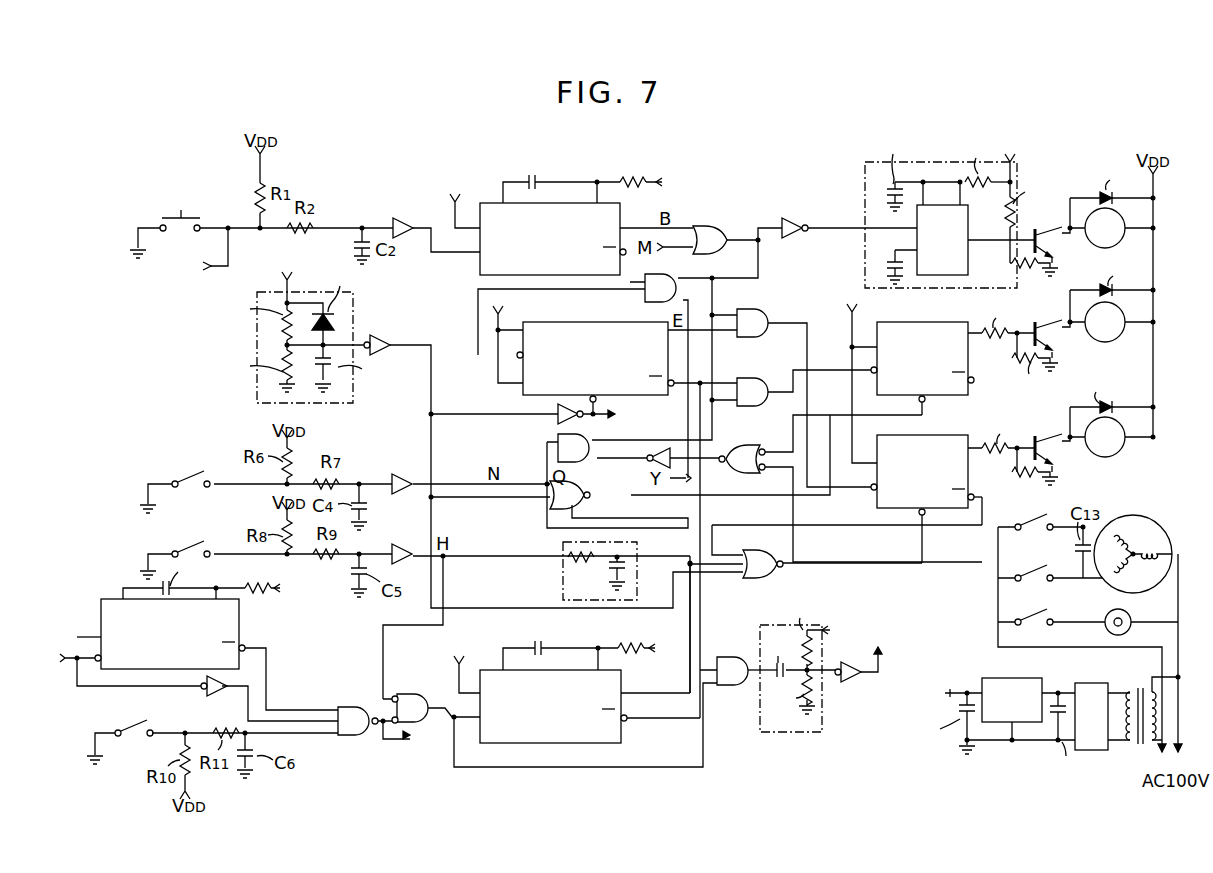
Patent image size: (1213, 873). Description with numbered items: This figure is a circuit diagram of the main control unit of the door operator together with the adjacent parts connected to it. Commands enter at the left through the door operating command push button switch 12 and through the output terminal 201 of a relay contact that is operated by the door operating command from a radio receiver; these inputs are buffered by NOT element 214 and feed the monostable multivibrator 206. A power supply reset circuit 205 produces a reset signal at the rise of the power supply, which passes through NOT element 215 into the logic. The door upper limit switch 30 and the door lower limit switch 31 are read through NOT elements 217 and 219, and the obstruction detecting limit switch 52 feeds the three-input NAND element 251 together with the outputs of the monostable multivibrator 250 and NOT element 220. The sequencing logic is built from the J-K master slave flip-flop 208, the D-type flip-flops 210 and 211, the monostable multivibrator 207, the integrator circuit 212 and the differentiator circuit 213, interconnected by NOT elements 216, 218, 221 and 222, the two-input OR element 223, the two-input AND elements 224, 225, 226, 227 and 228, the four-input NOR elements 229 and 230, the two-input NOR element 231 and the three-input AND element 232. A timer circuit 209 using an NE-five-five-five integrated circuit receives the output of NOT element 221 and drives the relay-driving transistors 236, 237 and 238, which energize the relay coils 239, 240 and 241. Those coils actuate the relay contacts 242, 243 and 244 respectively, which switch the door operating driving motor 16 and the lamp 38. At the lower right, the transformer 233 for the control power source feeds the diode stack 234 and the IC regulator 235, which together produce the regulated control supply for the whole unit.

The door operating command push button switch 12 is at (162, 222).
The output terminal of a relay contact 201 is at (172, 265).
The power supply reset circuit 205 is at (254, 350).
The monostable multivibrator 206 is at (494, 203).
The monostable multivibrator 207 is at (622, 740).
The J-K master slave flip-flop 208 is at (578, 300).
The timer circuit 209 is at (865, 194).
The D-type flip-flop 210 is at (970, 347).
The D-type flip-flop 211 is at (970, 454).
The integrator circuit 212 is at (563, 588).
The differentiator circuit 213 is at (760, 716).
The NOT element 214 is at (405, 216).
The NOT element 215 is at (383, 340).
The NOT element 216 is at (557, 420).
The NOT element 217 is at (404, 472).
The NOT element 218 is at (663, 450).
The NOT element 219 is at (404, 544).
The NOT element 220 is at (222, 692).
The NOT element 221 is at (792, 218).
The NOT element 222 is at (850, 684).
The 2-input OR element 223 is at (718, 227).
The 2-input AND element 224 is at (646, 301).
The 2-input AND element 225 is at (754, 311).
The 2-input AND element 226 is at (745, 379).
The 2-input AND element 227 is at (600, 460).
The 2-input AND element 228 is at (734, 447).
The 4-input NOR element 229 is at (625, 503).
The 4-input NOR element 230 is at (774, 572).
The 2-input NOR element 231 is at (414, 693).
The 3-input AND element 232 is at (726, 657).
The transformer for control power source 233 is at (1148, 690).
The diode stack 234 is at (1090, 683).
The IC regulator 235 is at (1000, 678).
The relay-driving transistor 236 is at (1052, 256).
The relay-driving transistor 237 is at (1052, 336).
The relay-driving transistor 238 is at (1040, 439).
The relay coil 239 is at (1127, 233).
The relay coil 240 is at (1123, 336).
The relay coil 241 is at (1125, 448).
The relay contact 242 is at (1054, 517).
The relay contact 243 is at (1042, 577).
The relay contact 244 is at (1042, 622).
The monostable multivibrator 250 is at (240, 623).
The 3-input NAND element 251 is at (346, 707).
The door upper limit switch 30 is at (222, 455).
The door lower limit switch 31 is at (210, 540).
The obstruction detecting limit switch 52 is at (146, 735).
The door operating driving motor 16 is at (1134, 515).
The lamp 38 is at (1131, 615).